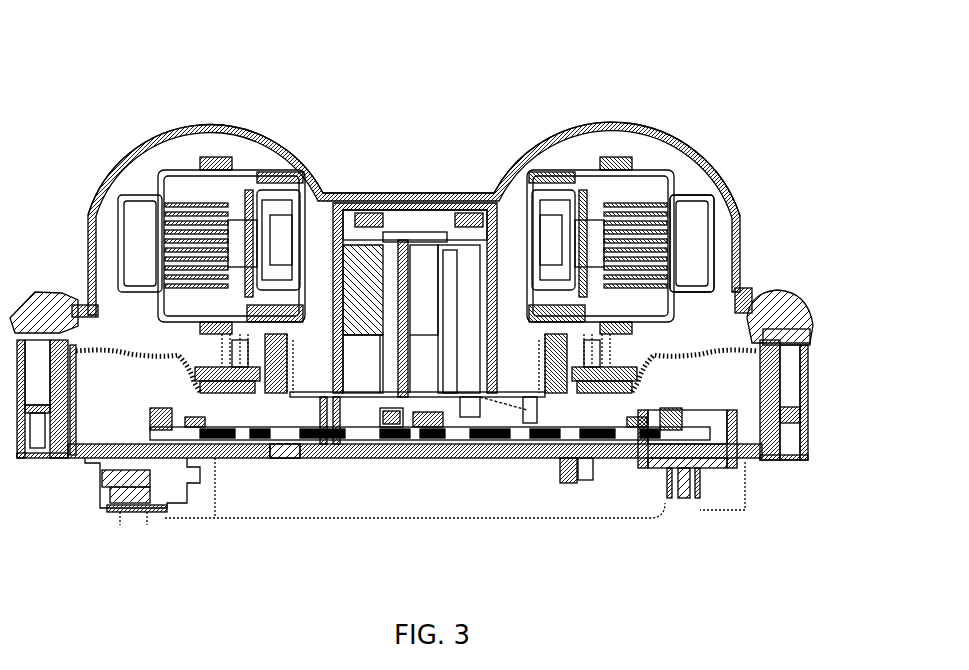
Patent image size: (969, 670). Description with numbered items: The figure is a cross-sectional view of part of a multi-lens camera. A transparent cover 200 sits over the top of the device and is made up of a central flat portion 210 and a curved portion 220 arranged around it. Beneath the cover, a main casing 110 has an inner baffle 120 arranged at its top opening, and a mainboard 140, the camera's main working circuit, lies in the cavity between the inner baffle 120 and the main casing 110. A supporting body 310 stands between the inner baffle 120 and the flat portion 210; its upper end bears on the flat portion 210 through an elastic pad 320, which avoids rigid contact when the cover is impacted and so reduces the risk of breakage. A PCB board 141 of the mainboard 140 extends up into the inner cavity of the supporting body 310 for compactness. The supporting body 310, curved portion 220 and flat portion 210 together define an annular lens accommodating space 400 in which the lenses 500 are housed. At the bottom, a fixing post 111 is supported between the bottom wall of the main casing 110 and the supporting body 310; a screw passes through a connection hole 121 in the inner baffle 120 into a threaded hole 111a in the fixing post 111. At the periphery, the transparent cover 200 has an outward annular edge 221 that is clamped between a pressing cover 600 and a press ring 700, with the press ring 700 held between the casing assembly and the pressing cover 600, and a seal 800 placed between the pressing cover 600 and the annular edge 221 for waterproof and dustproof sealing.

The main casing 110 is at (788, 416).
The fixing post 111 is at (340, 459).
The threaded hole 111a is at (320, 440).
The inner baffle 120 is at (110, 357).
The connection hole 121 is at (290, 458).
The mainboard 140 is at (480, 459).
The PCB board 141 is at (392, 459).
The transparent cover 200 is at (455, 48).
The flat portion 210 is at (468, 195).
The curved portion 220 is at (626, 123).
The annular edge 221 is at (70, 300).
The supporting body 310 is at (352, 195).
The elastic pad 320 is at (403, 197).
The lens accommodating space 400 is at (102, 232).
The lens 500 is at (690, 222).
The pressing cover 600 is at (812, 322).
The press ring 700 is at (780, 300).
The seal 800 is at (746, 292).